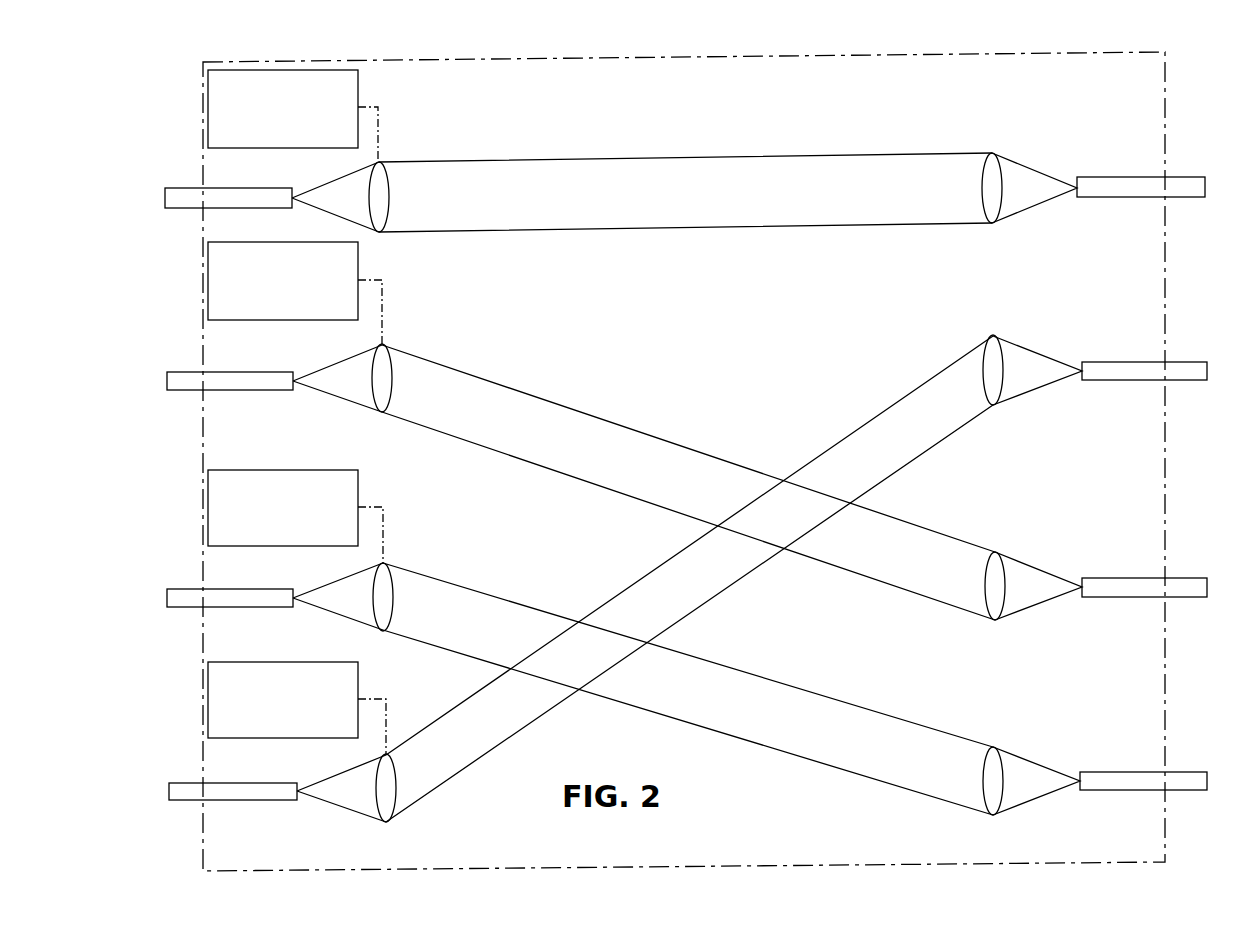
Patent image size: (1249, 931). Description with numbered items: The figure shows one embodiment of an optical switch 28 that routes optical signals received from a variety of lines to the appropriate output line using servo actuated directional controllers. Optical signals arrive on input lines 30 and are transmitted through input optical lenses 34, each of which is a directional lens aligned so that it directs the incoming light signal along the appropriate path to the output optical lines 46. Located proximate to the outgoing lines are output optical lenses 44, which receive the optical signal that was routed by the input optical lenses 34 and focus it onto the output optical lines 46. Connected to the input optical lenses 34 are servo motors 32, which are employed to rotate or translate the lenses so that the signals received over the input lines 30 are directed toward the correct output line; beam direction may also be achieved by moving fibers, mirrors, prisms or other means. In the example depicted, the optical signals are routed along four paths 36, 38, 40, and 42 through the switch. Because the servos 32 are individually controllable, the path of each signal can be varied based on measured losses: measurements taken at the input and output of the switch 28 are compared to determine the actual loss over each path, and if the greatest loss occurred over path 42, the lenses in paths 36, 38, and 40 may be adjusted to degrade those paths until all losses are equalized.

The optical switch 28 is at (537, 70).
The input line 30 is at (247, 208).
The servo motor 32 is at (280, 65).
The input optical lens 34 is at (382, 160).
The path 36 is at (693, 157).
The path 38 is at (645, 433).
The path 40 is at (743, 577).
The path 42 is at (685, 722).
The output optical lens 44 is at (992, 223).
The output optical line 46 is at (1125, 175).